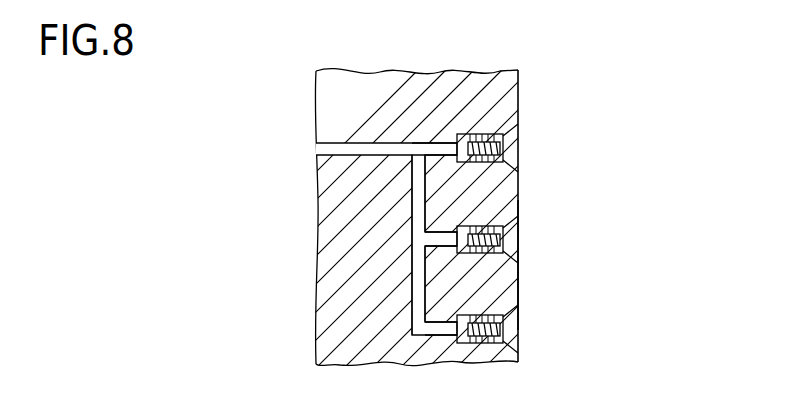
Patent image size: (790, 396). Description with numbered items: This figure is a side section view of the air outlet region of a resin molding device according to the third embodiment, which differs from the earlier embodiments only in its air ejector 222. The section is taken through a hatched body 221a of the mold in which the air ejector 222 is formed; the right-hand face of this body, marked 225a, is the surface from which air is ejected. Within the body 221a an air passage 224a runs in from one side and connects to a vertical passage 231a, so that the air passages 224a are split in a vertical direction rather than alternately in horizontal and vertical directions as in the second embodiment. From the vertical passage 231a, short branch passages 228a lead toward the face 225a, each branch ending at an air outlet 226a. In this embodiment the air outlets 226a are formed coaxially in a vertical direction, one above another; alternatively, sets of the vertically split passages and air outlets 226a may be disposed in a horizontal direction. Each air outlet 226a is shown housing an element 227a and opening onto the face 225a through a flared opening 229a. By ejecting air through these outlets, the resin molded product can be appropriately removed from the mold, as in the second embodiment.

The housing body 221a is at (490, 97).
The air ejector 222 is at (532, 147).
The air passages 224a is at (330, 150).
The inner surface 225a is at (519, 289).
The air outlets 226a is at (507, 146).
The spring contact 227a is at (505, 158).
The branch passage 228a is at (460, 140).
The opening 229a is at (506, 140).
The vertical groove 231a is at (411, 139).